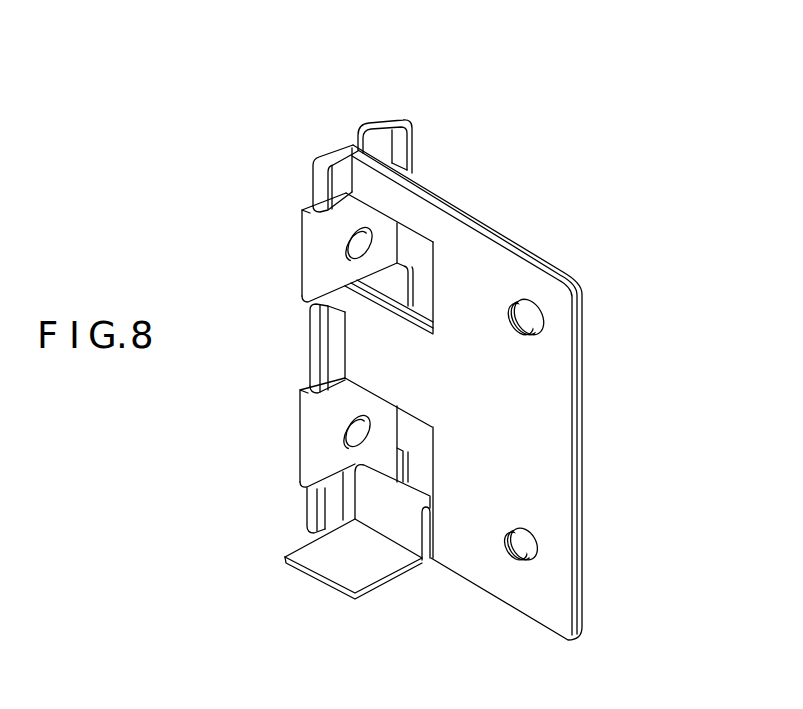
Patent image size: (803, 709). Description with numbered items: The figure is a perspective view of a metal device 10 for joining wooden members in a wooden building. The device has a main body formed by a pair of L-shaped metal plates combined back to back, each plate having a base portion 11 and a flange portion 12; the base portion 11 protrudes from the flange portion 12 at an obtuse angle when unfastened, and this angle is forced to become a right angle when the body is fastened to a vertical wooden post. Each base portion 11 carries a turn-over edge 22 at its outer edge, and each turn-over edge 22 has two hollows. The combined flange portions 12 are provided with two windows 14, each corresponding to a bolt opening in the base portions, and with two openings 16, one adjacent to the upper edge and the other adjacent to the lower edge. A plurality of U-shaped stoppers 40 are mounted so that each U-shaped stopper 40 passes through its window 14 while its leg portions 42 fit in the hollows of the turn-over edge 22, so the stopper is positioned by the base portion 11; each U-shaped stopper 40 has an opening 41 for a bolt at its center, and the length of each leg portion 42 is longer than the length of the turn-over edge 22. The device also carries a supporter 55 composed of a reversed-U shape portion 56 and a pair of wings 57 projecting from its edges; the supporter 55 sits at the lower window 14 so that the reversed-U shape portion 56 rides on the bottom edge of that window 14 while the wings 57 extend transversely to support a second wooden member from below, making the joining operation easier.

The bracket 10 is at (599, 326).
The base portion 11 is at (323, 156).
The flange portion 12 is at (553, 459).
The window 14 is at (425, 237).
The opening 16 is at (548, 303).
The turn-over edge 22 is at (407, 128).
The U-shaped stopper 40 is at (315, 263).
The opening for bolt 41 is at (345, 228).
The leg portion 42 is at (303, 210).
The supporter 55 is at (303, 548).
The reversed-U shape portion 56 is at (401, 524).
The wing 57 is at (337, 573).